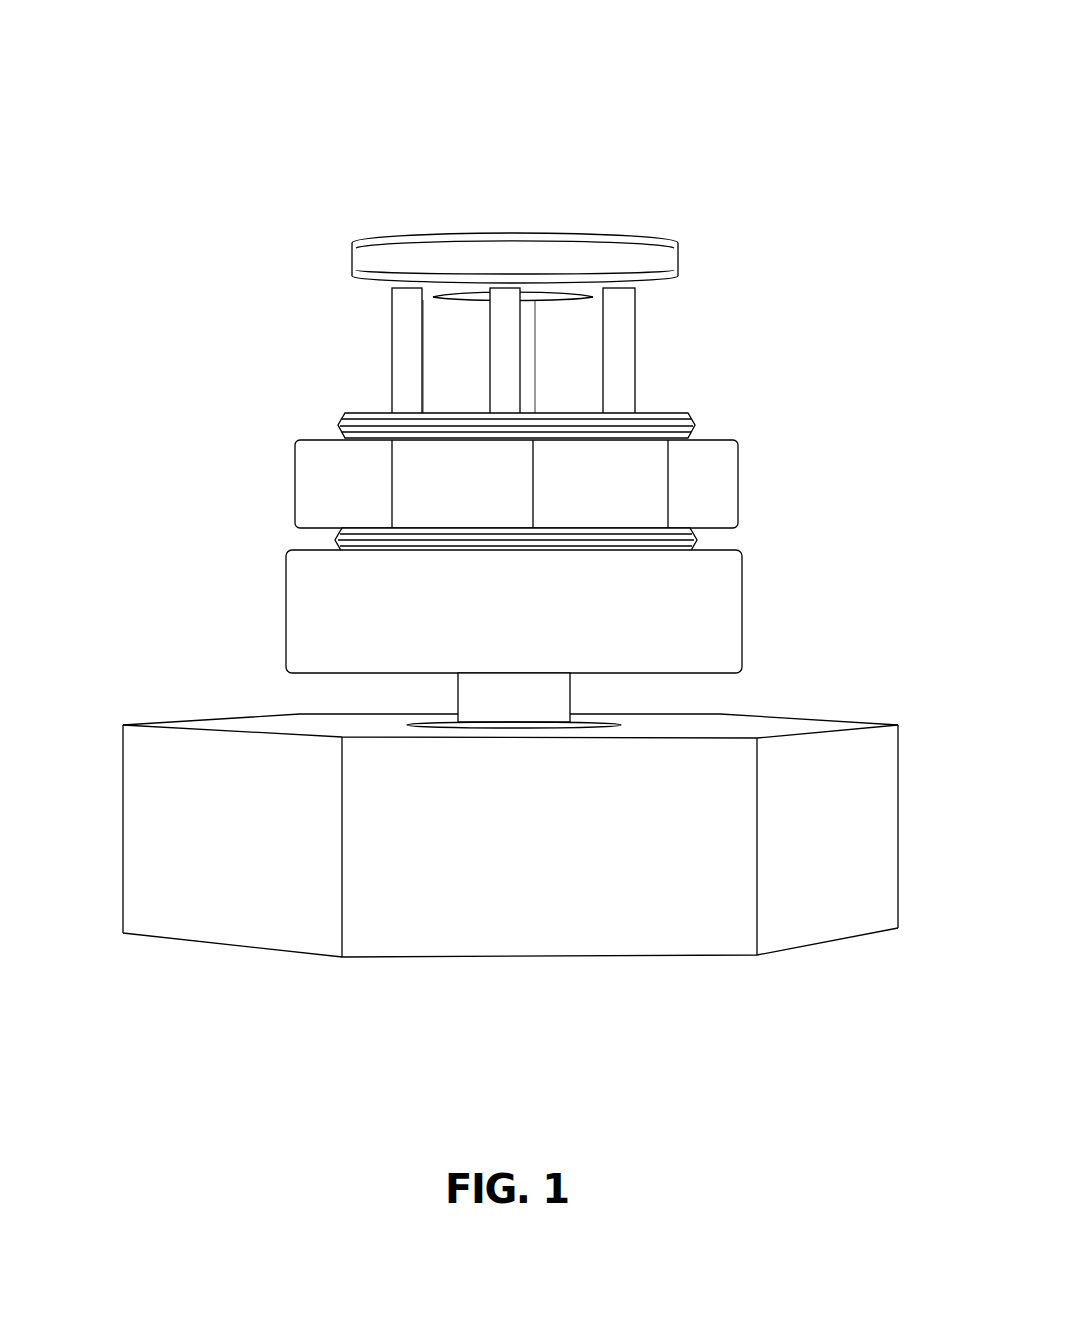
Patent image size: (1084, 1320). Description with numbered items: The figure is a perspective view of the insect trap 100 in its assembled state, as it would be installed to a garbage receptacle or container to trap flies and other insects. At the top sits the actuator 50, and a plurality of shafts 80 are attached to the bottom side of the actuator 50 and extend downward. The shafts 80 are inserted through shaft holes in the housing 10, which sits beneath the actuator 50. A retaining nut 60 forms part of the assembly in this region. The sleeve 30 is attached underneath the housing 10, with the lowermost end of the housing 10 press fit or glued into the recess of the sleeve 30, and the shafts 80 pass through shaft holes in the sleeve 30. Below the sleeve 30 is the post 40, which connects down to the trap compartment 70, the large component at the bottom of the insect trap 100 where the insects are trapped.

The insect trap 100 is at (686, 176).
The actuator 50 is at (420, 252).
The shafts 80 is at (405, 333).
The housing 10 is at (350, 417).
The retaining nut 60 is at (335, 480).
The sleeve 30 is at (323, 608).
The post 40 is at (480, 693).
The trap compartment 70 is at (263, 902).